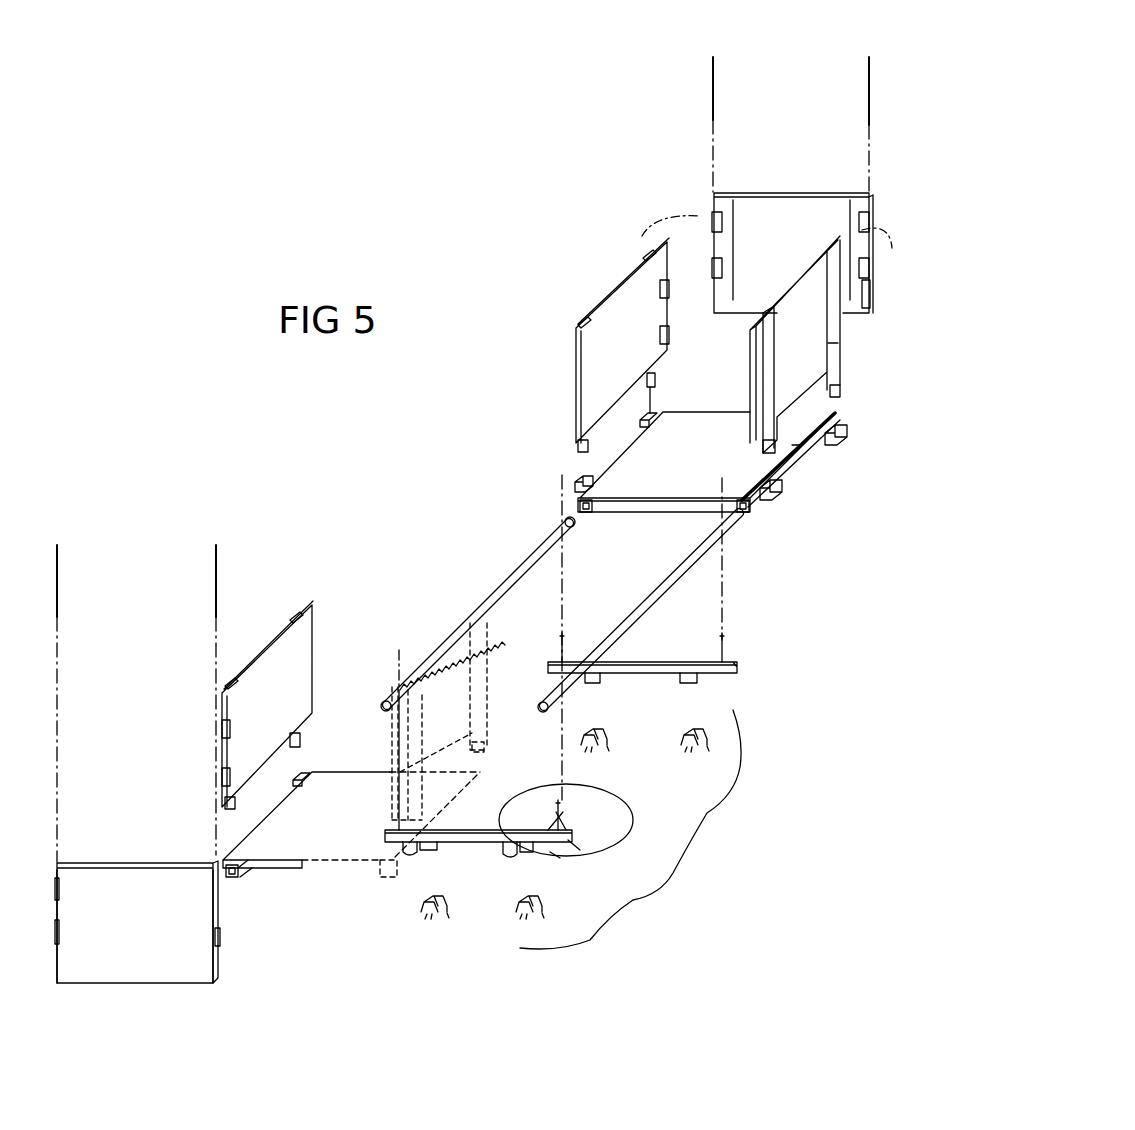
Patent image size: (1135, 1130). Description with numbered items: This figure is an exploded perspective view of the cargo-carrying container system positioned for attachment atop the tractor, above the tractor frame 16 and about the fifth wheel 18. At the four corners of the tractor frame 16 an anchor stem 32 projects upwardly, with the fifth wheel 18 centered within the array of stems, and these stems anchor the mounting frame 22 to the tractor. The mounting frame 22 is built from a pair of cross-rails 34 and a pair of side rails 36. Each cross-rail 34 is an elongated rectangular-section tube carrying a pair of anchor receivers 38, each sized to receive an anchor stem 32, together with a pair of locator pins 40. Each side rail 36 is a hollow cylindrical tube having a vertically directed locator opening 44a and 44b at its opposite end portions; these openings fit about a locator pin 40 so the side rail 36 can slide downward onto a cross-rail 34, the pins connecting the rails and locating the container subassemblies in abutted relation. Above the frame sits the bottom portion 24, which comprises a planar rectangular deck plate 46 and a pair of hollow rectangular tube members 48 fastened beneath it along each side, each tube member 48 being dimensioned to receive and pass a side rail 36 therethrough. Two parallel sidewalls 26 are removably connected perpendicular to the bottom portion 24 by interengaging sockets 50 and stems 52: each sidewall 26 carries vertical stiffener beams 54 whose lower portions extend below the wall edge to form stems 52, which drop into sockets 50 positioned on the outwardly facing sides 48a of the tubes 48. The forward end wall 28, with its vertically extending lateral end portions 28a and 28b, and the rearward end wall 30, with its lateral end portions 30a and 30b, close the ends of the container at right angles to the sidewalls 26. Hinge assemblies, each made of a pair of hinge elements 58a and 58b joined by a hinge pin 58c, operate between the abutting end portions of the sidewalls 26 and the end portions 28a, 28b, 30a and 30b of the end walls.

The tractor frame 16 is at (720, 774).
The fifth wheel 18 is at (633, 815).
The mounting frame 22 is at (830, 624).
The bottom portion 24 is at (710, 492).
The sidewall 26 is at (807, 266).
The forward end wall 28 is at (772, 184).
The lateral end portion 28a is at (733, 200).
The lateral end portion 28b is at (850, 202).
The rearward end wall 30 is at (152, 997).
The lateral end portion 30a is at (70, 975).
The lateral end portion 30b is at (198, 973).
The anchor stem 32 is at (606, 728).
The cross-rail 34 is at (742, 667).
The side rail 36 is at (500, 562).
The anchor receiver 38 is at (594, 679).
The locator pin 40 is at (566, 640).
The locator opening 44a is at (564, 528).
The locator opening 44b is at (400, 690).
The deck plate 46 is at (256, 871).
The tube member 48 is at (596, 516).
The outwardly facing side 48a is at (783, 466).
The socket 50 is at (576, 483).
The stem 52 is at (658, 378).
The vertical stiffener beam 54 is at (646, 255).
The hinge element 58a is at (661, 338).
The hinge element 58b is at (872, 222).
The hinge pin 58c is at (713, 75).